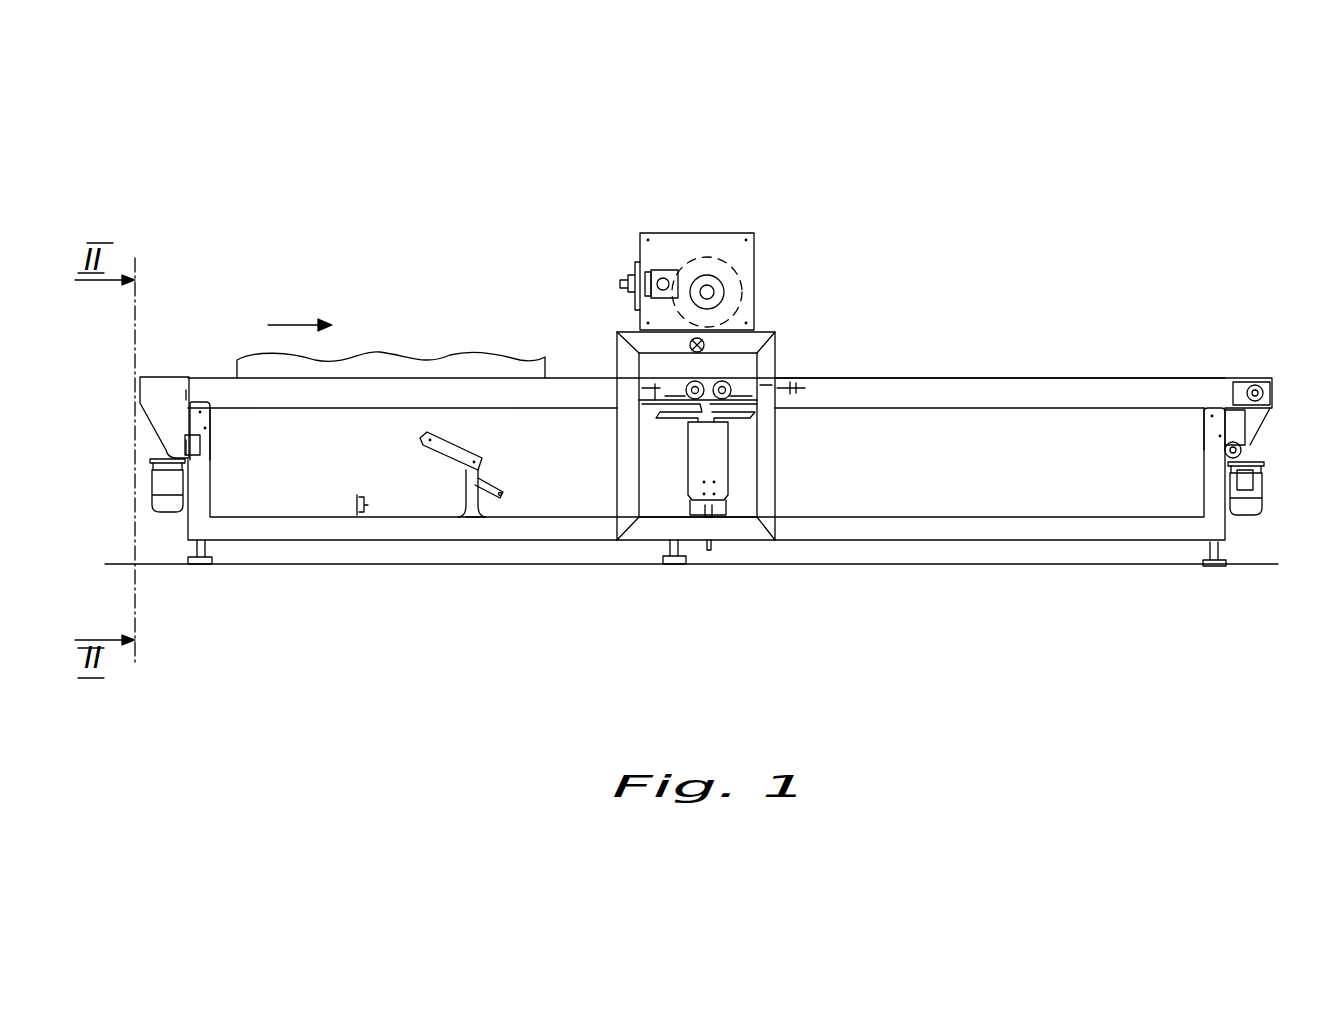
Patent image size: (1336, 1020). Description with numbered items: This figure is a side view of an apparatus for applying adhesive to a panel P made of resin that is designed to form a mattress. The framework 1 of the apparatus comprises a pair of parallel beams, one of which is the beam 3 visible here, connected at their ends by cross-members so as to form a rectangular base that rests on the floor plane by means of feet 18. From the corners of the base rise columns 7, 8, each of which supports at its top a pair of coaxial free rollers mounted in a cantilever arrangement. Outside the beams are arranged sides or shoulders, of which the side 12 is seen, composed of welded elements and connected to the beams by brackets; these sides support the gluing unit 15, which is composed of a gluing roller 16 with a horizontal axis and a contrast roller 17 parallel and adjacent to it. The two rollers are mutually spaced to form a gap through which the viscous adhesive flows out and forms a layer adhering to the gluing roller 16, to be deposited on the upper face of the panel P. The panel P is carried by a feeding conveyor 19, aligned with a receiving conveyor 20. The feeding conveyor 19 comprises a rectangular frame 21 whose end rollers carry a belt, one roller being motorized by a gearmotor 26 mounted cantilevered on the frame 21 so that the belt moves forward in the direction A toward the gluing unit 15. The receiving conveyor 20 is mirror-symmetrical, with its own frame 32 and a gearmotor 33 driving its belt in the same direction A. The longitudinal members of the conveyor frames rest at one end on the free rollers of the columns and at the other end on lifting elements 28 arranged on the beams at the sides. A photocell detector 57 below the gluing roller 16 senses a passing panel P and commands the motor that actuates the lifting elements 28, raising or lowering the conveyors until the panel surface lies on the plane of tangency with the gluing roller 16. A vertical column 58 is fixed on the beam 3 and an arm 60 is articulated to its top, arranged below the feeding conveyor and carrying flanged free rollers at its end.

The framework 1 is at (1062, 541).
The beam 3 is at (295, 524).
The column 7 is at (198, 474).
The column 8 is at (1214, 490).
The side 12 is at (765, 461).
The gluing unit 15 is at (757, 252).
The gluing roller 16 is at (757, 282).
The contrast roller 17 is at (633, 277).
The feet 18 is at (202, 567).
The feeding conveyor 19 is at (222, 373).
The receiving conveyor 20 is at (1093, 380).
The frame 21 is at (443, 398).
The gearmotor 26 is at (166, 484).
The lifting element 28 is at (688, 470).
The frame 32 is at (1035, 397).
The gearmotor 33 is at (1262, 494).
The photocell detector 57 is at (704, 344).
The vertical column 58 is at (468, 490).
The arm 60 is at (437, 460).
The direction A is at (285, 322).
The panel P is at (376, 365).